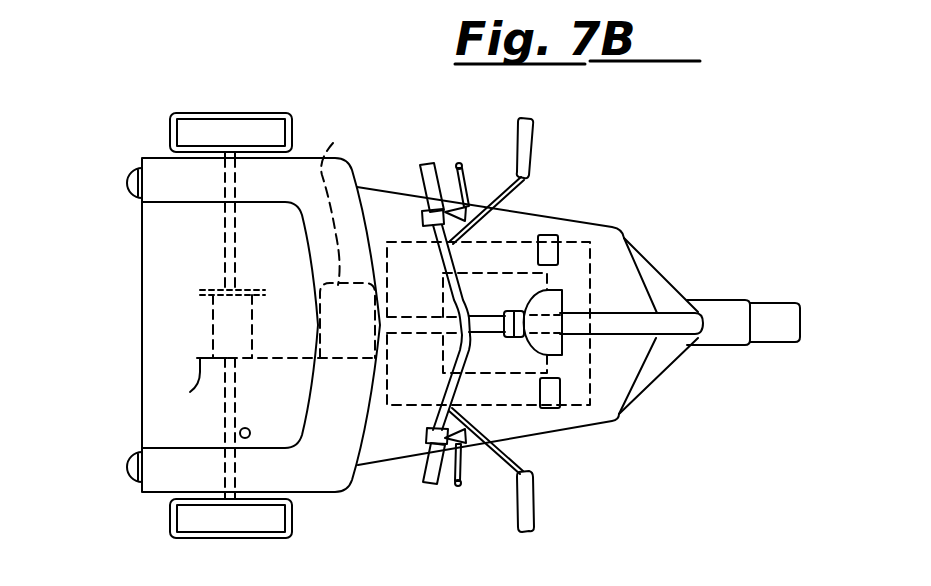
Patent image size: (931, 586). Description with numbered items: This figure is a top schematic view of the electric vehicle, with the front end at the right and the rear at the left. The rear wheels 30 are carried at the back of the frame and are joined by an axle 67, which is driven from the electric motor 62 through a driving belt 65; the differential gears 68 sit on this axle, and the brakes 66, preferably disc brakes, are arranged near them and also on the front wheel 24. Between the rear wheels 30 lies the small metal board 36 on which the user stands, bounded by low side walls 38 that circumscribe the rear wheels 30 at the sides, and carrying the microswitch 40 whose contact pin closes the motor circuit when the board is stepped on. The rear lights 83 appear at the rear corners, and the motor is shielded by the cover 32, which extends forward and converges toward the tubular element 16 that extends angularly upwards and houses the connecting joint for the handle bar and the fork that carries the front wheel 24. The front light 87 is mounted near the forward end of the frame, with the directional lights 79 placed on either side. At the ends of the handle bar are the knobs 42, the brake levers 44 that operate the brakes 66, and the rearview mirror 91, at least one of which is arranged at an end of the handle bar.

The tubular element 16 is at (636, 313).
The front wheel 24 is at (765, 312).
The rear wheels 30 is at (262, 122).
The cover 32 is at (623, 367).
The board 36 is at (153, 358).
The side walls 38 is at (157, 483).
The microswitch 40 is at (252, 438).
The knobs 42 is at (428, 166).
The brake levers 44 is at (459, 165).
The electric motor 62 is at (347, 233).
The driving belt 65 is at (190, 392).
The brakes 66 is at (200, 290).
The axle 67 is at (223, 218).
The differential gears 68 is at (213, 312).
The directional lights 79 is at (548, 245).
The rear lights 83 is at (126, 185).
The front light 87 is at (632, 312).
The rearview mirror 91 is at (530, 142).